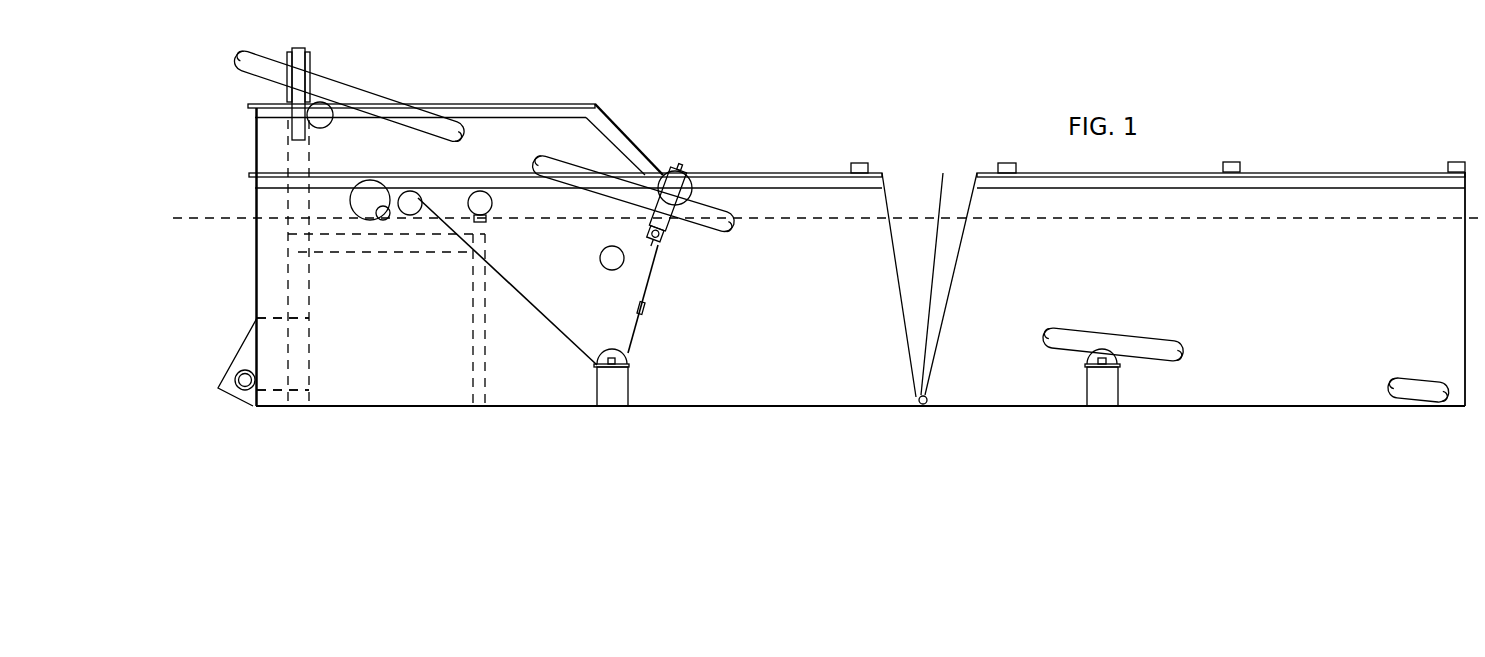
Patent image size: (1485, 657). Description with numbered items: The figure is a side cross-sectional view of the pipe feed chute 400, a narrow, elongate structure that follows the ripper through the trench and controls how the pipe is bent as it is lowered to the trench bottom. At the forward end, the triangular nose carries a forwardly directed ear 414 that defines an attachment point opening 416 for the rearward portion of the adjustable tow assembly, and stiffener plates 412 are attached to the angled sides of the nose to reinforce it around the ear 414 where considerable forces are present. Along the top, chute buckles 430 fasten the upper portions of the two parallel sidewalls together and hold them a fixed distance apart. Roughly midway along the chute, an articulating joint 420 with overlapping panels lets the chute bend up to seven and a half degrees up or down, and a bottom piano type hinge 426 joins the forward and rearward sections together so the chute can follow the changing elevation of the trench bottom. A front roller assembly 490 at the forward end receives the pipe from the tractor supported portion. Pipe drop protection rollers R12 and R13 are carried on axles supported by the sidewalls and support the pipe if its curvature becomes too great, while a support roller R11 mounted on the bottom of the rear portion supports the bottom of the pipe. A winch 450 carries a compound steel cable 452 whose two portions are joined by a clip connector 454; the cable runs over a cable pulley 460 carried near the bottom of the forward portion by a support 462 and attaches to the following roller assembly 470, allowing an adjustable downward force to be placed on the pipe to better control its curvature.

The pipe feed chute 400 is at (1305, 87).
The stiffener plates 412 is at (277, 387).
The ear 414 is at (247, 357).
The attachment point opening 416 is at (240, 382).
The articulating joint 420 is at (900, 365).
The bottom piano type hinge 426 is at (928, 393).
The chute buckles 430 is at (857, 158).
The winch 450 is at (410, 197).
The compound steel cable 452 is at (543, 320).
The clip connector 454 is at (648, 305).
The cable pulley 460 is at (627, 355).
The support 462 is at (630, 385).
The following roller assembly 470 is at (695, 182).
The front roller assembly 490 is at (327, 57).
The support roller R11 is at (1115, 345).
The pipe drop protection roller R12 is at (480, 202).
The pipe drop protection roller R13 is at (590, 253).